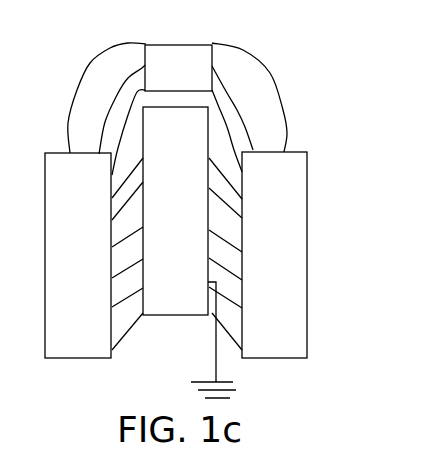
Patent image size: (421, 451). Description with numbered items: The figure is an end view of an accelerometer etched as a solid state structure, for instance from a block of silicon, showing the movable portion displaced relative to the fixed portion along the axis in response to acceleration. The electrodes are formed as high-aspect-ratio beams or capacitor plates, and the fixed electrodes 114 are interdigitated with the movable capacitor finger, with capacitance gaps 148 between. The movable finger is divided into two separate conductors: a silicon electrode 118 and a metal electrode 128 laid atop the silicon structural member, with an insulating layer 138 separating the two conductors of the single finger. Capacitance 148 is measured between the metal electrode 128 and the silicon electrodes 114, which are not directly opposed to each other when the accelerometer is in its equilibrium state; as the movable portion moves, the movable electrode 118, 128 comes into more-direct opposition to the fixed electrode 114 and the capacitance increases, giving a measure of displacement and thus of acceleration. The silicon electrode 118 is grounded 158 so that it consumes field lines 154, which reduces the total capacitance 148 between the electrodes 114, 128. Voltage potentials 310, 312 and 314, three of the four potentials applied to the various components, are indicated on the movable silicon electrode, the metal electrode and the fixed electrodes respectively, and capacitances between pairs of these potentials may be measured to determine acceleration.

The fixed electrode 114 is at (63, 333).
The movable electrode 118 is at (162, 288).
The movable metal electrode 128 is at (178, 50).
The insulating layer 138 is at (213, 100).
The capacitance gap 148 is at (112, 58).
The field lines 154 is at (228, 245).
The ground connection 158 is at (232, 381).
The voltage potential 310 is at (175, 211).
The voltage potential 312 is at (163, 80).
The voltage potential 314 is at (176, 255).